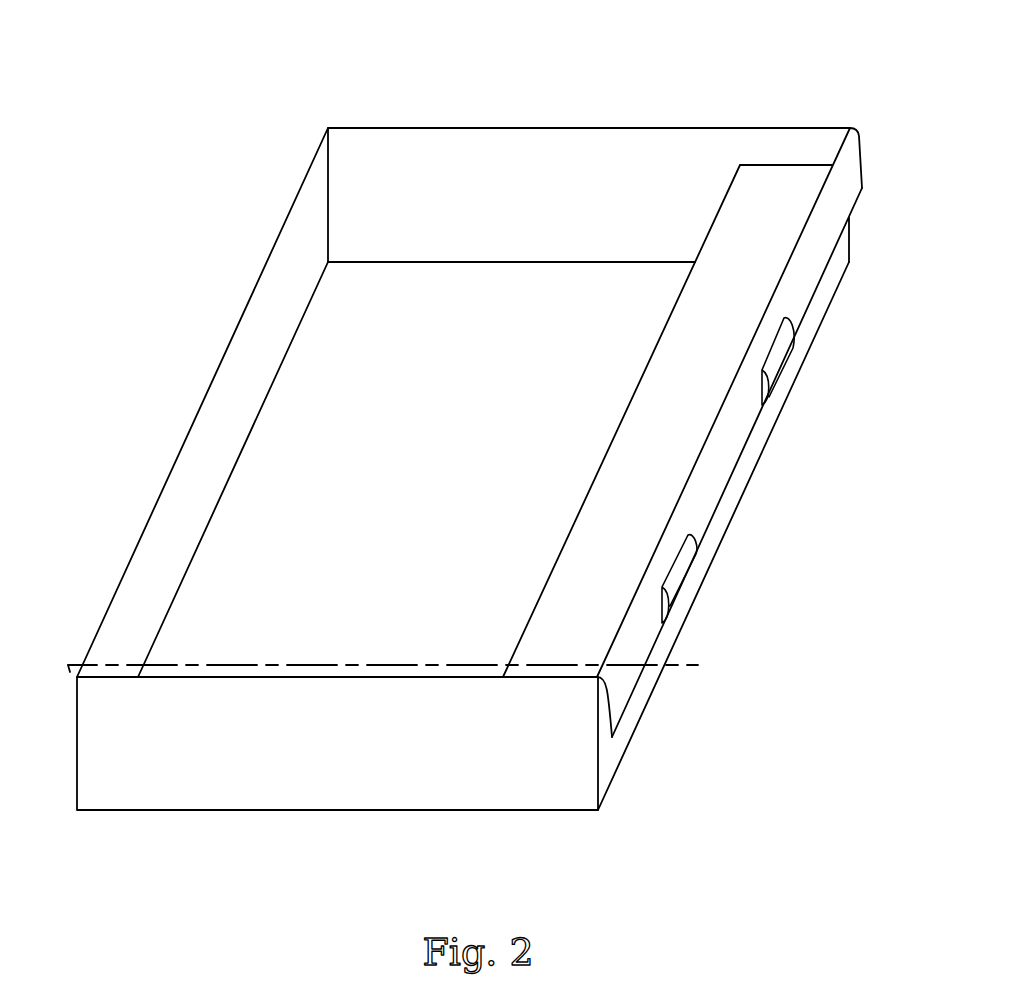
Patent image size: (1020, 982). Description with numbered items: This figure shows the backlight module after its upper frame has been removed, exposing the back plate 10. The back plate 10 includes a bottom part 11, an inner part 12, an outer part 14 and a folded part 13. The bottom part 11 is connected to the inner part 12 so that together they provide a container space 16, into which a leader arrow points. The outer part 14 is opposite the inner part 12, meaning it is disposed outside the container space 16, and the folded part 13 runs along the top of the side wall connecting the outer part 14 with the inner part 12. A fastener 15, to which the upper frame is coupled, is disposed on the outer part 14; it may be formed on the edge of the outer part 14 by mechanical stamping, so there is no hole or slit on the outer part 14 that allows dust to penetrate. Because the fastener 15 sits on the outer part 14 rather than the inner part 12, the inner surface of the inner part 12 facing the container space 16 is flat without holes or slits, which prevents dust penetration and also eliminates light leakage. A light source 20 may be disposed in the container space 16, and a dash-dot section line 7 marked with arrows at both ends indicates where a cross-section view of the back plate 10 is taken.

The section line 7- 7 is at (62, 675).
The back plate 10 is at (341, 116).
The bottom part 11 is at (212, 600).
The inner part 12 is at (720, 522).
The folded part 13 is at (827, 183).
The outer part 14 is at (803, 272).
The fastener 15 is at (777, 356).
The container space 16 is at (313, 424).
The light source 20 is at (578, 632).